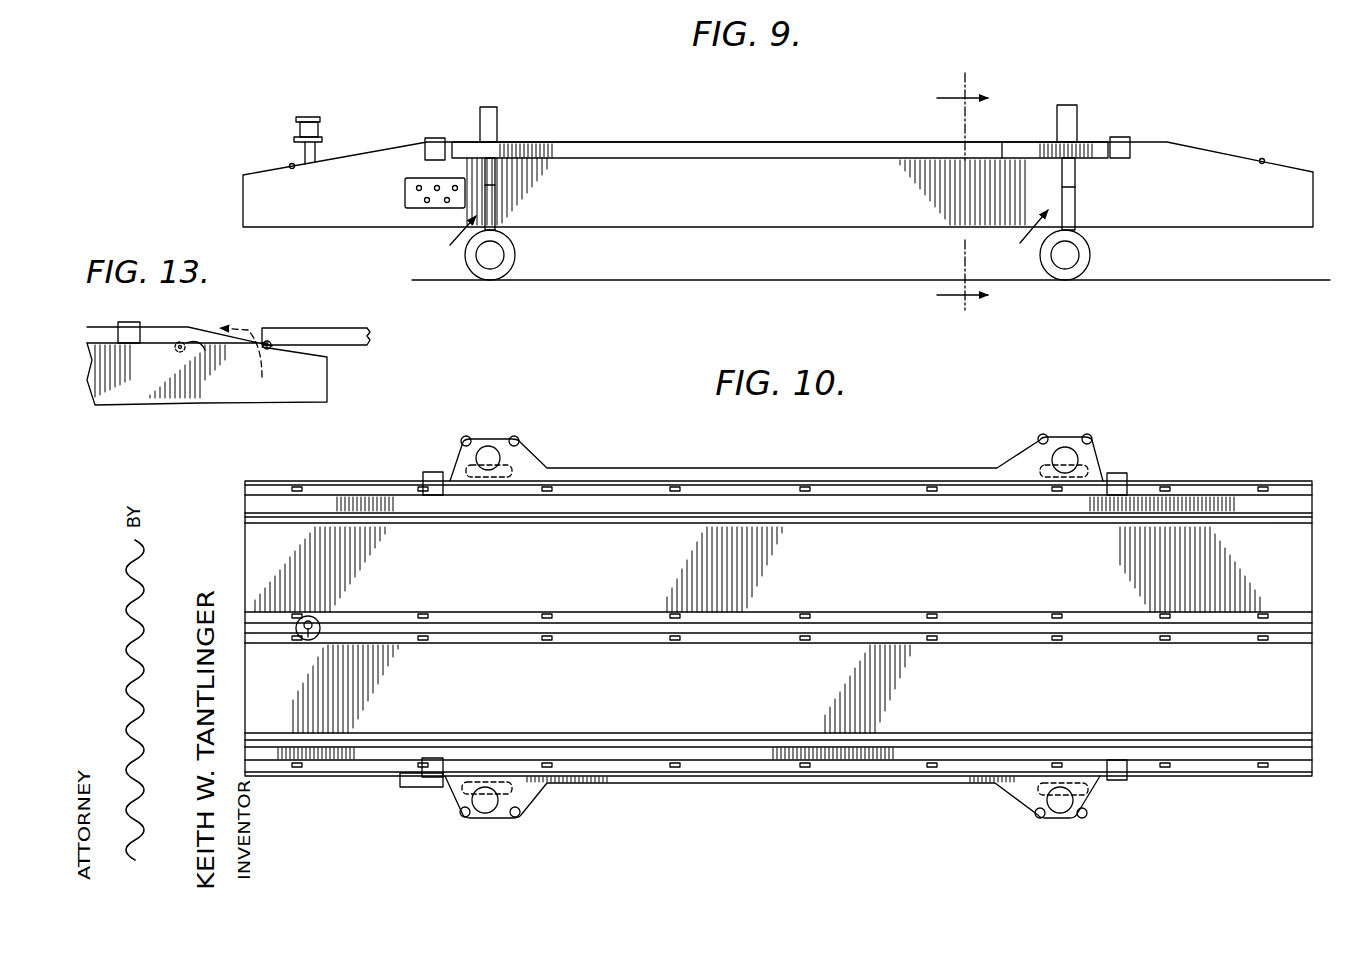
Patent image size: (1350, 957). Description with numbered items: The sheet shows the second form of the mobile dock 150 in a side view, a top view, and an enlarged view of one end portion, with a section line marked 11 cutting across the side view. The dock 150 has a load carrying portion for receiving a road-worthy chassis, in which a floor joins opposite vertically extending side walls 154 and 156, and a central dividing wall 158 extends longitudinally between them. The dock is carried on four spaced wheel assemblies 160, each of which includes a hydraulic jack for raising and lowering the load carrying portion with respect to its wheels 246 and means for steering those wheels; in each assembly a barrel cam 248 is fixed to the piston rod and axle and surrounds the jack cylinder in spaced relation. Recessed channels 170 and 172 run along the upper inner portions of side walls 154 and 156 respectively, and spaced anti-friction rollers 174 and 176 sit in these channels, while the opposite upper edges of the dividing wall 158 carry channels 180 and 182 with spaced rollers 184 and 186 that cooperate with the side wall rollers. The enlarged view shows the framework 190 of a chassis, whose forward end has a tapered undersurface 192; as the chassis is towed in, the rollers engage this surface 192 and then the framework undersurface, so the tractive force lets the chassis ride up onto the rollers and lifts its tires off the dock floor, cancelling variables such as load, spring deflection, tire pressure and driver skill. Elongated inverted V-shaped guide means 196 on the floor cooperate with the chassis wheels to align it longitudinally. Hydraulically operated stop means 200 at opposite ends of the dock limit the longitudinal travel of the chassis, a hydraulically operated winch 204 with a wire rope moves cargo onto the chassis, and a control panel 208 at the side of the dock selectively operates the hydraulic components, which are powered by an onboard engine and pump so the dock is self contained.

In FIG. 9, the mobile dock 150 is at (800, 138).
In FIG. 10, the mobile dock 150 is at (825, 478).
In FIG. 13, the side wall 154 is at (322, 392).
In FIG. 10, the side wall 154 is at (632, 478).
In FIG. 9, the side wall 156 is at (758, 206).
In FIG. 10, the side wall 156 is at (727, 783).
In FIG. 10, the central dividing wall 158 is at (583, 612).
In FIG. 9, the wheel assembly 160 is at (730, 236).
In FIG. 10, the wheel assembly 160 is at (481, 436).
In FIG. 13, the recessed channel 170 is at (105, 330).
In FIG. 10, the recessed channel 170 is at (965, 487).
In FIG. 10, the recessed channel 172 is at (622, 765).
In FIG. 9, the rollers 174 is at (292, 164).
In FIG. 13, the rollers 174 is at (205, 350).
In FIG. 10, the rollers 174 is at (420, 487).
In FIG. 10, the rollers 176 is at (803, 763).
In FIG. 10, the channel 180 is at (975, 620).
In FIG. 10, the channel 182 is at (722, 643).
In FIG. 10, the rollers 184 is at (543, 613).
In FIG. 10, the rollers 186 is at (668, 641).
In FIG. 13, the framework 190 is at (290, 328).
In FIG. 13, the tapered undersurface 192 is at (276, 349).
In FIG. 10, the guide means 196 is at (577, 525).
In FIG. 9, the stop means 200 is at (433, 138).
In FIG. 13, the stop means 200 is at (140, 338).
In FIG. 10, the stop means 200 is at (433, 472).
In FIG. 9, the hydraulically operated winch 204 is at (318, 126).
In FIG. 10, the hydraulically operated winch 204 is at (306, 641).
In FIG. 9, the control panel 208 is at (405, 196).
In FIG. 10, the control panel 208 is at (400, 783).
In FIG. 9, the wheels 246 is at (514, 258).
In FIG. 10, the wheels 246 is at (505, 447).
In FIG. 9, the barrel cam 248 is at (496, 210).
In FIG. 9, the section line 11- 11 is at (967, 200).